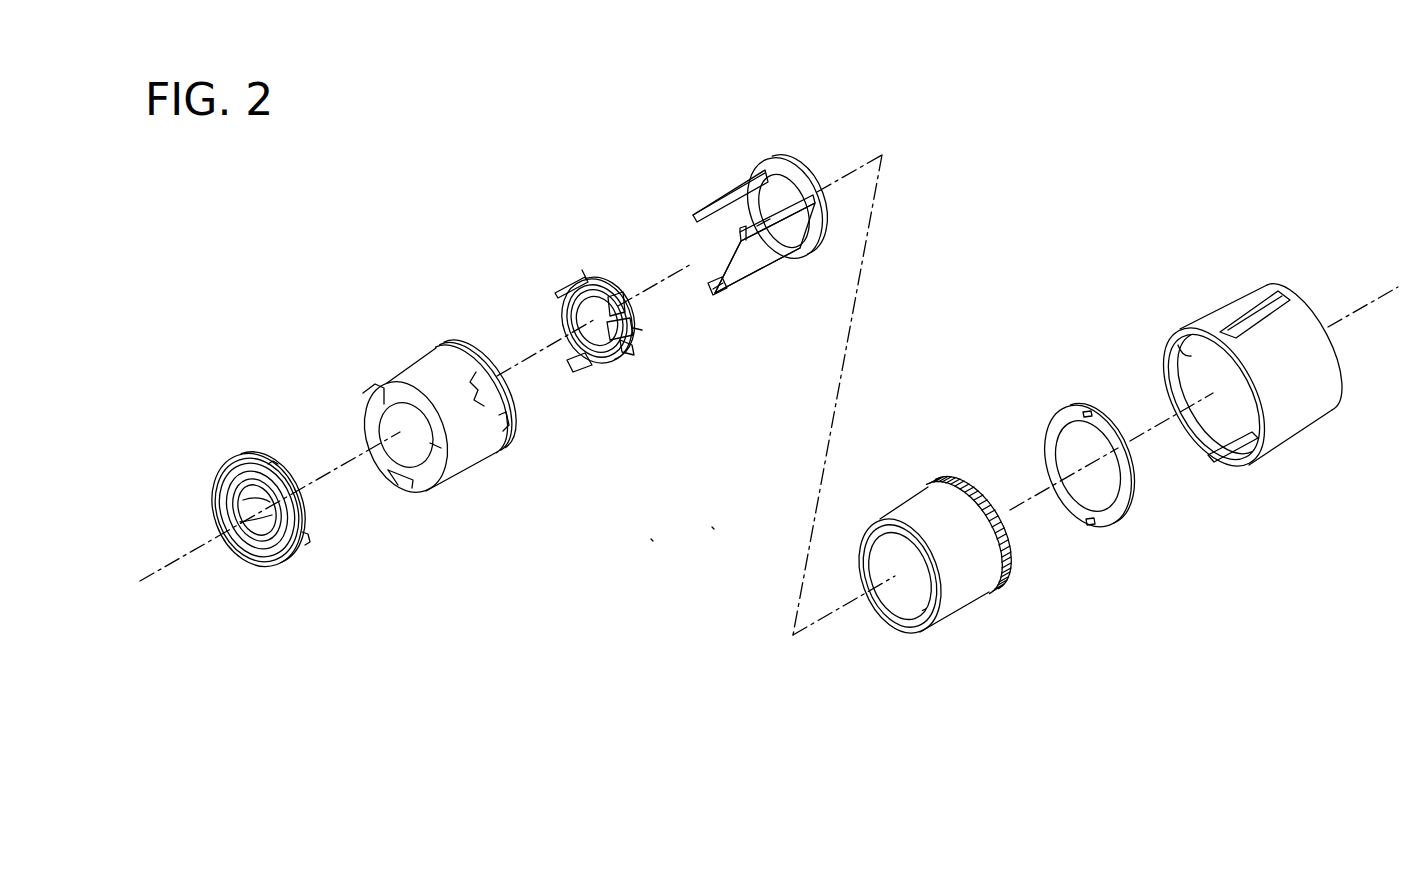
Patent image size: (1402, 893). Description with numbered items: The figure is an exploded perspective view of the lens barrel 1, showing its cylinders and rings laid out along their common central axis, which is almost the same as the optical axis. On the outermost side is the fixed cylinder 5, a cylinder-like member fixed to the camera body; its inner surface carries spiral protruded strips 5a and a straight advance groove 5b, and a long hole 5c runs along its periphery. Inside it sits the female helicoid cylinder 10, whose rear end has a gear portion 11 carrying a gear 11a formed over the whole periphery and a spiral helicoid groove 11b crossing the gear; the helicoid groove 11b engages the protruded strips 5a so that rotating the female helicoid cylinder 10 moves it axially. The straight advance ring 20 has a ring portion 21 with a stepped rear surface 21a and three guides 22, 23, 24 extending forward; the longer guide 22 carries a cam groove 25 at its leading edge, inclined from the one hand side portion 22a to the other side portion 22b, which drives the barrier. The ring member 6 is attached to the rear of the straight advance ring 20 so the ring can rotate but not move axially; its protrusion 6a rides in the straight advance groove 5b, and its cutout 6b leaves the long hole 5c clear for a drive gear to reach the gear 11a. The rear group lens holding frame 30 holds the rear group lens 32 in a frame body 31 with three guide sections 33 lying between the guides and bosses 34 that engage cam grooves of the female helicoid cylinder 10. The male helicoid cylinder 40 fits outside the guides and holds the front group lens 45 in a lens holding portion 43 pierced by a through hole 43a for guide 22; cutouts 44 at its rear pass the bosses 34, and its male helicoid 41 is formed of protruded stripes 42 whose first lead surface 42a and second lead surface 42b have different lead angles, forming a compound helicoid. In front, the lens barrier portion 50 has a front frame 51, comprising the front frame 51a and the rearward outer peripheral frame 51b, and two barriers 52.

The lens barrel 1 is at (913, 80).
The fixed cylinder 5 is at (1303, 414).
The spiral protruded strips 5a is at (1181, 342).
The straight advance groove 5b is at (1213, 465).
The long hole 5c is at (1250, 324).
The ring member 6 is at (1055, 410).
The protrusion 6a is at (1090, 526).
The cutout 6b is at (1089, 411).
The female helicoid cylinder 10 is at (952, 606).
The gear portion 11 is at (936, 479).
The gear 11a is at (1012, 556).
The helicoid groove 11b is at (986, 478).
The straight advance ring 20 is at (777, 157).
The ring portion 21 is at (806, 252).
The rear surface 21a is at (824, 216).
The guide 22 is at (776, 258).
The one hand side portion 22a is at (750, 276).
The other side portion 22b is at (712, 283).
The guide 23 is at (724, 247).
The guide 24 is at (716, 198).
The cam groove 25 is at (720, 296).
The rear group lens holding frame 30 is at (594, 268).
The frame body 31 is at (614, 292).
The rear group lens 32 is at (604, 342).
The guide sections 33 is at (566, 290).
The bosses 34 is at (584, 272).
The male helicoid cylinder 40 is at (388, 380).
The male helicoid 41 is at (430, 343).
The protruded stripes 42 is at (444, 344).
The first lead surface 42a is at (475, 397).
The second lead surface 42b is at (466, 344).
The lens holding portion 43 is at (373, 433).
The through hole 43a is at (396, 486).
The cutouts 44 is at (509, 418).
The front group lens 45 is at (420, 455).
The lens barrier portion 50 is at (235, 459).
The front frame 51 is at (292, 556).
The front frame 51a is at (248, 555).
The outer peripheral frame 51b is at (300, 514).
The barriers 52 is at (220, 523).